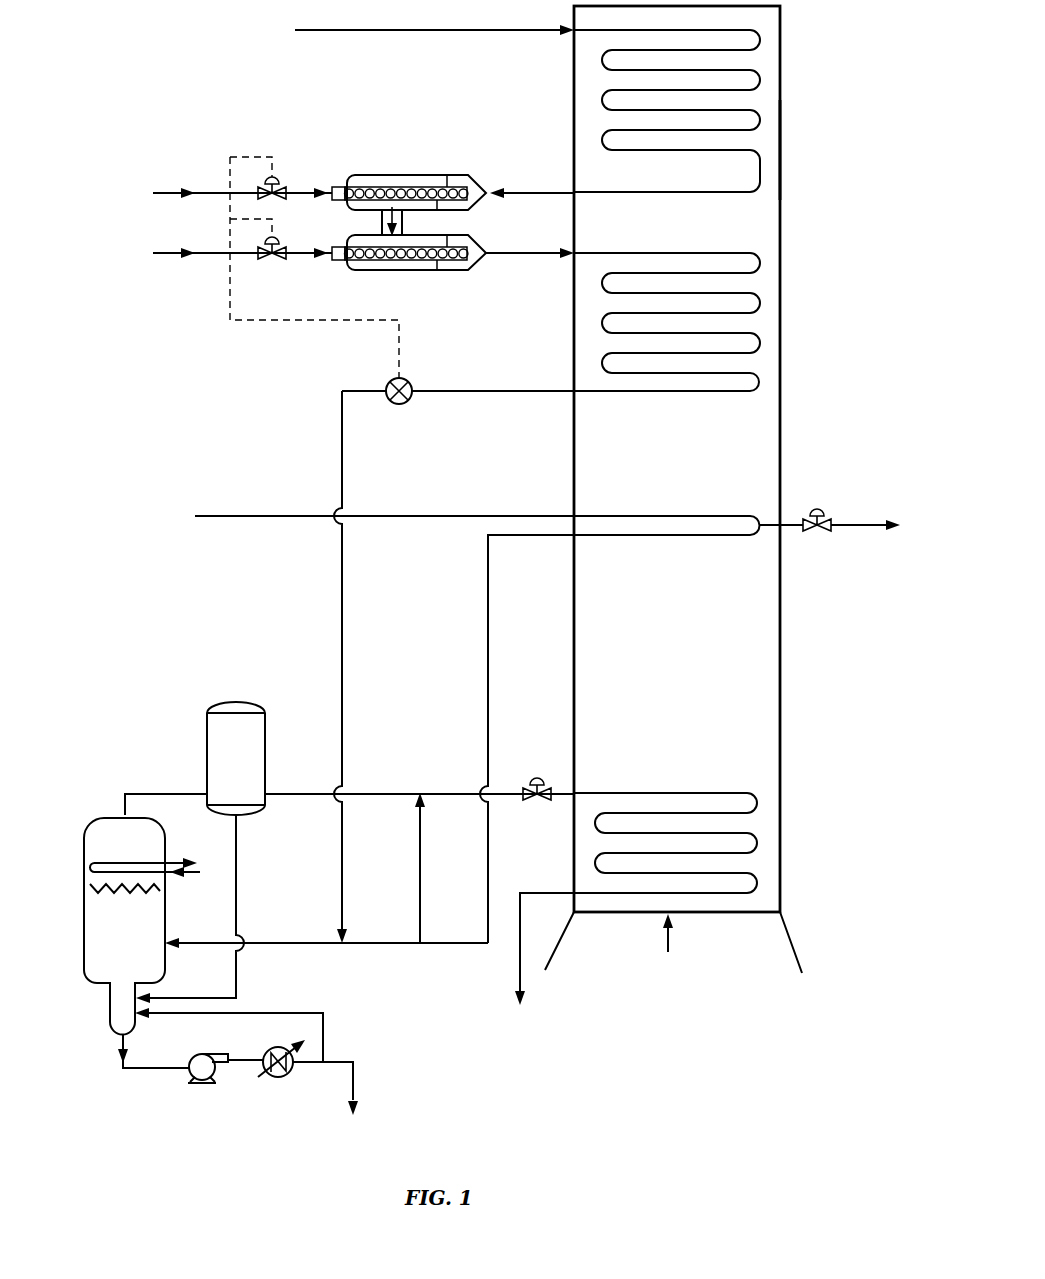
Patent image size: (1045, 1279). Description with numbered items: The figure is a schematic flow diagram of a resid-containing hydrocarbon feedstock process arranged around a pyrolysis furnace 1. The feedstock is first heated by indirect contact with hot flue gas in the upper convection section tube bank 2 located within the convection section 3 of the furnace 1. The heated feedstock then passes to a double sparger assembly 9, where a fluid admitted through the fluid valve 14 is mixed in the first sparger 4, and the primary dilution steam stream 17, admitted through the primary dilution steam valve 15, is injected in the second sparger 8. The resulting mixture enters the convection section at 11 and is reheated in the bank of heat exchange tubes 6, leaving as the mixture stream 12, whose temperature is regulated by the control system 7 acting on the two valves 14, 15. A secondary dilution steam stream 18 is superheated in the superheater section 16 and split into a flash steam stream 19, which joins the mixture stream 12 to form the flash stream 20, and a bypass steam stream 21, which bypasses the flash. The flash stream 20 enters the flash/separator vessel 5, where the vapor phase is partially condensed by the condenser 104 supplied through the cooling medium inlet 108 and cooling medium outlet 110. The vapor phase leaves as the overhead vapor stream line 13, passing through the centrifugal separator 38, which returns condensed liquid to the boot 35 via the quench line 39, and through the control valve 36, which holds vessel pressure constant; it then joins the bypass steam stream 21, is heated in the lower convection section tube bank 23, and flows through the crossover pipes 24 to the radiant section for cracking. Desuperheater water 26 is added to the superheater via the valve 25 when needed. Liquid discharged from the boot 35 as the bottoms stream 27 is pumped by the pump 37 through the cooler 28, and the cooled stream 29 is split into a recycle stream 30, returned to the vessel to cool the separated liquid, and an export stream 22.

The pyrolysis furnace 1 is at (768, 218).
The upper convection section tube bank 2 is at (762, 78).
The convection section 3 is at (781, 140).
The first sparger 4 is at (353, 176).
The flash/separator vessel 5 is at (124, 894).
The bank of heat exchange tubes 6 is at (753, 281).
The control system 7 is at (390, 383).
The second sparger 8 is at (360, 271).
The double sparger assembly 9 is at (382, 224).
The convection section entry 11 is at (504, 257).
The mixture stream 12 is at (448, 391).
The overhead vapor stream line 13 is at (370, 792).
The fluid valve 14 is at (271, 179).
The primary dilution steam valve 15 is at (274, 238).
The superheater section 16 is at (675, 515).
The primary dilution steam stream 17 is at (213, 252).
The secondary dilution steam stream 18 is at (260, 515).
The flash steam stream 19 is at (362, 940).
The flash stream 20 is at (300, 942).
The bypass steam stream 21 is at (422, 848).
The export stream 22 is at (342, 1058).
The lower convection section tube bank 23 is at (762, 754).
The crossover pipes 24 is at (518, 952).
The valve 25 is at (818, 510).
The desuperheater water 26 is at (872, 527).
The bottoms stream 27 is at (120, 1042).
The cooler 28 is at (285, 1078).
The cooled stream 29 is at (308, 1065).
The recycle stream 30 is at (278, 1012).
The boot 35 is at (108, 997).
The control valve 36 is at (538, 778).
The pump 37 is at (222, 1080).
The centrifugal separator 38 is at (195, 758).
The quench line 39 is at (240, 876).
The condenser 104 is at (100, 864).
The cooling medium inlet 108 is at (185, 873).
The cooling medium outlet 110 is at (180, 862).